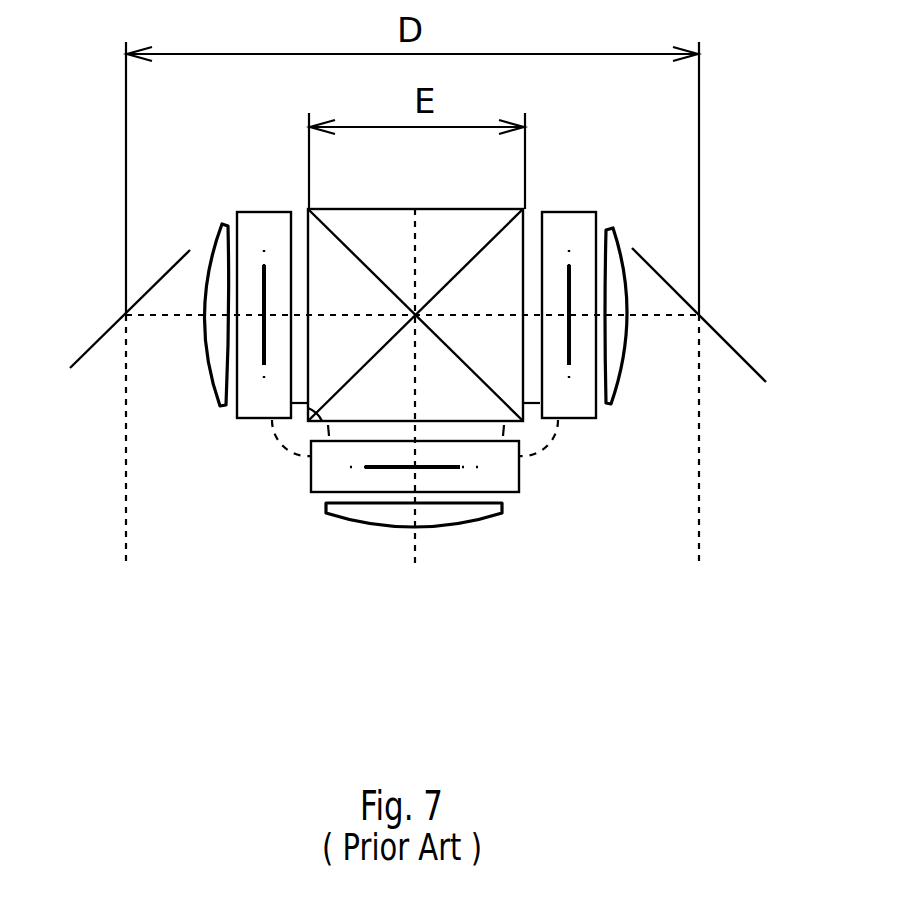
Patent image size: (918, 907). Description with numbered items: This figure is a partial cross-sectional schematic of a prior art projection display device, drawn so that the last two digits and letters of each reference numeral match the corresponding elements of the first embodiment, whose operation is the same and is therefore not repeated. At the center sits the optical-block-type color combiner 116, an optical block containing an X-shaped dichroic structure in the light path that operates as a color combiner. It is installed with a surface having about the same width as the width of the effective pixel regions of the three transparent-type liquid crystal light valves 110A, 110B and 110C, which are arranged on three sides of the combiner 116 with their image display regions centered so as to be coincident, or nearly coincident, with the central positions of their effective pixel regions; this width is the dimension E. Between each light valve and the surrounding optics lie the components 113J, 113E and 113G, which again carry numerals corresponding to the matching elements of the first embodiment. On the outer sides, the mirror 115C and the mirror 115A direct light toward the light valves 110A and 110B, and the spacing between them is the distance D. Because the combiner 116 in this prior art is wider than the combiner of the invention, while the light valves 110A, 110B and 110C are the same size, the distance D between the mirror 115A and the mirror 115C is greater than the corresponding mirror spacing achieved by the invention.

The optical-block-type color combiner 116 is at (380, 232).
The transparent-type liquid crystal light valve 110A is at (270, 214).
The transparent-type liquid crystal light valve 110B is at (558, 214).
The transparent-type liquid crystal light valve 110C is at (311, 485).
The field lens 113J is at (218, 228).
The field lens 113E is at (612, 228).
The field lens 113G is at (354, 515).
The mirror 115C is at (86, 350).
The mirror 115A is at (776, 326).